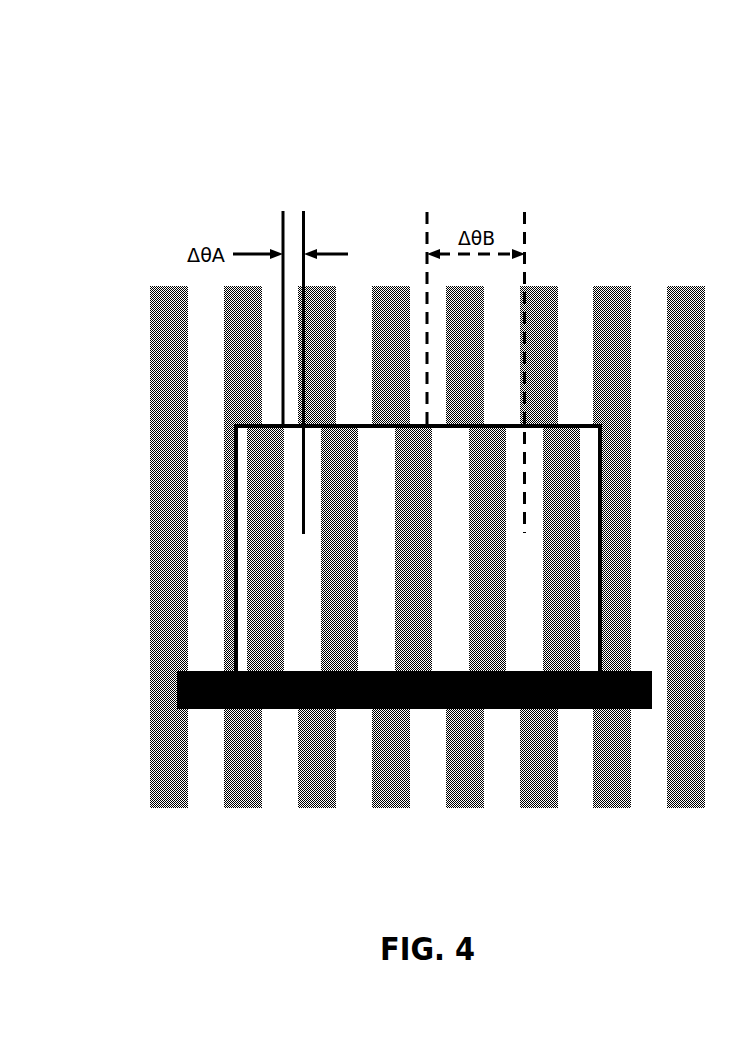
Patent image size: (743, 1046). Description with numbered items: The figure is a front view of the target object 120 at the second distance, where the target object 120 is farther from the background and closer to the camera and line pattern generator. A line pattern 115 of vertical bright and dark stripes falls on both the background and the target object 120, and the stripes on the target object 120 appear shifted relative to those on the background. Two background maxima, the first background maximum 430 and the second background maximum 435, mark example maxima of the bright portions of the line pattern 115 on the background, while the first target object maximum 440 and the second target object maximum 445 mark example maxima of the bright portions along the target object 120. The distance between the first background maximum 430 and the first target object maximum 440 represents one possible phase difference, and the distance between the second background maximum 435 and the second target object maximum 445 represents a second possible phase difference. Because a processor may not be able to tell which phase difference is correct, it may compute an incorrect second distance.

The line pattern 115 is at (391, 853).
The target object 120 is at (222, 506).
The background maximum 1 430 is at (281, 196).
The target object maximum 1 440 is at (306, 196).
The background maximum 2 435 is at (418, 236).
The target object maximum 2 445 is at (534, 238).